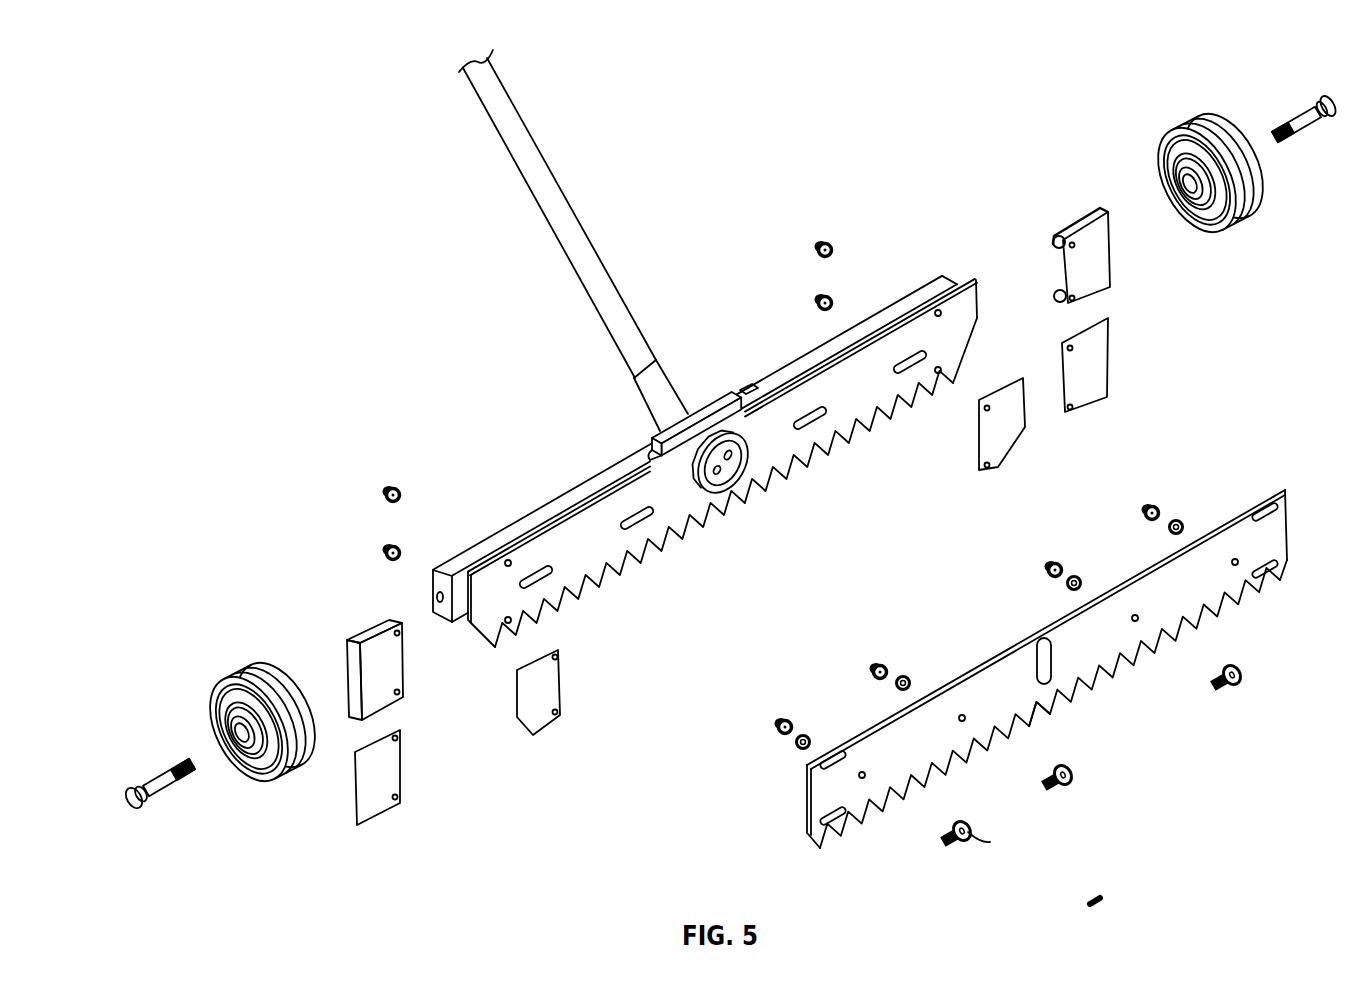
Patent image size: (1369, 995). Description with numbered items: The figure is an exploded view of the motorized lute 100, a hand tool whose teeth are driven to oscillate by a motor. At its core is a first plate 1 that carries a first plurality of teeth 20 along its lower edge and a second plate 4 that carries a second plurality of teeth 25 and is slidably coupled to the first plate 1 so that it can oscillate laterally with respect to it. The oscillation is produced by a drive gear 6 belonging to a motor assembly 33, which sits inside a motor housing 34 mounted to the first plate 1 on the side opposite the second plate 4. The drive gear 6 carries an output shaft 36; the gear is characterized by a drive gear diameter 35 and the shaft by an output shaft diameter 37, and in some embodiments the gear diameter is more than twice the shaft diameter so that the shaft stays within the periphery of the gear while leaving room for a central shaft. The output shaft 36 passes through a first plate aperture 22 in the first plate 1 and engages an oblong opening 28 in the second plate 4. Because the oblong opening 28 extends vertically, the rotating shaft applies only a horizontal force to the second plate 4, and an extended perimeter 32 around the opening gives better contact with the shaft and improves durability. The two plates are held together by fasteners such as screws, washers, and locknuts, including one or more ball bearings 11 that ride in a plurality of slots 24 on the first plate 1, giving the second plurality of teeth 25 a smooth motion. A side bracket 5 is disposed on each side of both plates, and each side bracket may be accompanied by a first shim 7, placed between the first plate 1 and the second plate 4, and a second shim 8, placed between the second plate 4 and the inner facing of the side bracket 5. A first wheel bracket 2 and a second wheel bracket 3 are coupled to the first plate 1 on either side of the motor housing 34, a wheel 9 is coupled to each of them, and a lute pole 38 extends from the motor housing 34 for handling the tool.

The motorized lute 100 is at (228, 250).
The lute pole 38 is at (556, 180).
The motor housing 34 is at (657, 424).
The first wheel bracket 2 is at (523, 521).
The second wheel bracket 3 is at (893, 303).
The first plurality of teeth 20 is at (548, 585).
The first plate 1 is at (968, 318).
The plurality of slots 24 is at (822, 424).
The motor assembly 33 is at (718, 404).
The first plate aperture 22 is at (754, 386).
The output shaft diameter 37 is at (648, 452).
The drive gear 6 is at (735, 455).
The drive gear diameter 35 is at (740, 438).
The output shaft 36 is at (715, 478).
The ball bearing 11 is at (784, 748).
The second plate 4 is at (862, 812).
The second plurality of teeth 25 is at (1125, 668).
The oblong opening 28 is at (1046, 695).
The extended perimeter 32 is at (1040, 643).
The wheel 9 is at (218, 690).
The side bracket 5 is at (1096, 255).
The second shim 8 is at (1092, 358).
The first shim 7 is at (1012, 432).